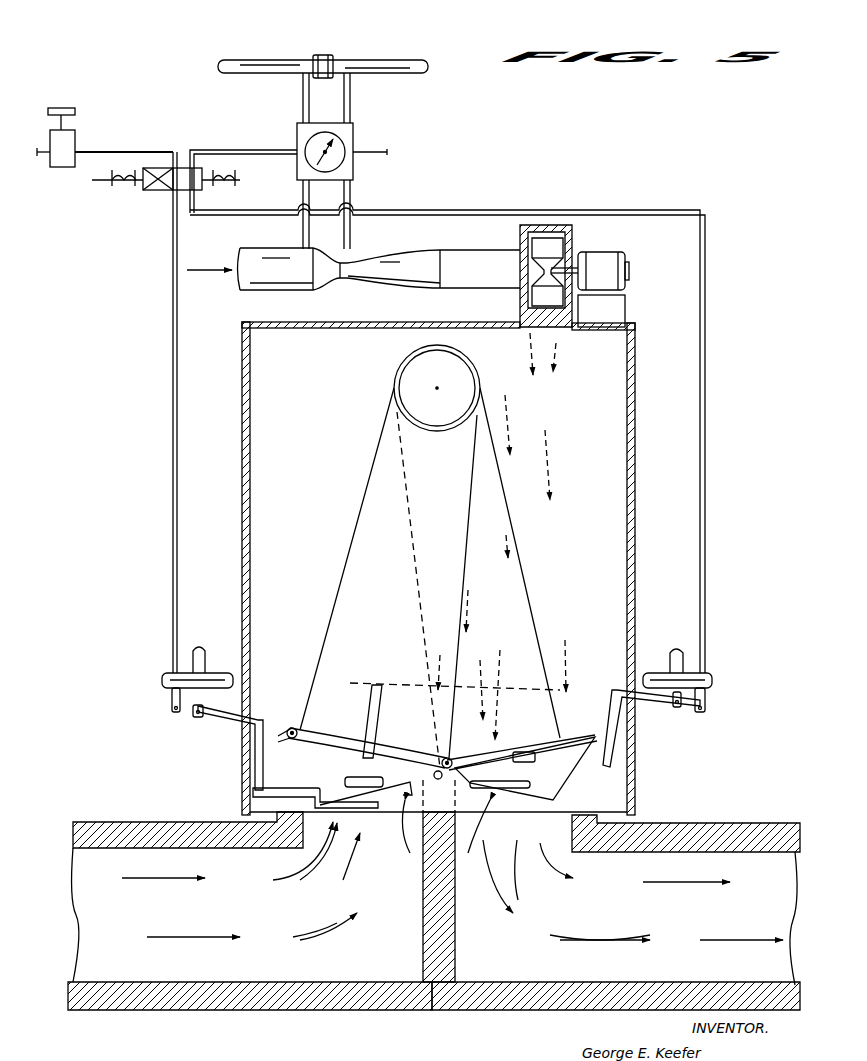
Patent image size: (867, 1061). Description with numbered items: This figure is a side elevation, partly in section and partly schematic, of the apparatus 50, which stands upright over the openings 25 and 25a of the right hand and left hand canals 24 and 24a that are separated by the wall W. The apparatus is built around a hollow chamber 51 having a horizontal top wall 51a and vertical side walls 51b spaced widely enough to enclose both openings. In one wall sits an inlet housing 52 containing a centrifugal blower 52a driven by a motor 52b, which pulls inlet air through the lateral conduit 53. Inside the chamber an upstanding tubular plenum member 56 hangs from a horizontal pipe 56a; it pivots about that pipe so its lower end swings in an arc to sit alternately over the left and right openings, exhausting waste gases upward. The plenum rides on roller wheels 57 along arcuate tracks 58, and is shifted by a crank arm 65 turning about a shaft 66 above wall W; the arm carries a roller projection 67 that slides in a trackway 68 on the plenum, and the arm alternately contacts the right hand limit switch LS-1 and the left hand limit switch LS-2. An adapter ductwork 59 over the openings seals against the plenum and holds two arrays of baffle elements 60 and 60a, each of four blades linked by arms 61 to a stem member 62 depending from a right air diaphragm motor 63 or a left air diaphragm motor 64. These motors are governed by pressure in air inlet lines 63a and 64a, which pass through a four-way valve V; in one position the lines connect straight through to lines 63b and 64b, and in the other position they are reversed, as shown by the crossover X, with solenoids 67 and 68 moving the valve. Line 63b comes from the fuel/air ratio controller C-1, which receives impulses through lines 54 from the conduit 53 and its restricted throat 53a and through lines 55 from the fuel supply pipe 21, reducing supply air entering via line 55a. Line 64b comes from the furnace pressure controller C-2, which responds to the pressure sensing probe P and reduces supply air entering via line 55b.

The fuel supply pipe 21 is at (402, 46).
The impulse lines 55 is at (350, 100).
The impulse lines 54 is at (350, 197).
The fuel/air ratio controller C-1 is at (365, 130).
The supply air line 55a is at (390, 152).
The air line 63b is at (220, 152).
The air inlet line 63a is at (520, 195).
The pressure sensing probe P is at (63, 106).
The supply air line 55b is at (40, 156).
The furnace pressure controller C-2 is at (83, 128).
The air line 64b is at (172, 150).
The air inlet line 64a is at (175, 330).
The four-way valve V is at (185, 165).
The crossover X is at (157, 190).
The solenoid 68 is at (120, 187).
The solenoid 67 is at (228, 187).
The lateral conduit 53 is at (455, 260).
The restricted throat 53a is at (343, 278).
The centrifugal blower 52a is at (548, 238).
The inlet housing 52 is at (572, 238).
The motor 52b is at (605, 258).
The hollow chamber 51 is at (401, 558).
The top wall 51a is at (262, 322).
The side walls 51b is at (340, 384).
The apparatus 50 is at (147, 441).
The horizontal pipe 56a is at (393, 385).
The plenum member 56 is at (342, 521).
The left hand limit switch LS-2 is at (363, 757).
The right hand limit switch LS-1 is at (548, 742).
The arcuate tracks 58 is at (305, 742).
The crank arm 65 is at (405, 763).
The roller wheels 57 is at (293, 728).
The shaft 66 is at (442, 775).
The left hand air diaphragm motor 64 is at (162, 680).
The stem member 62 is at (172, 696).
The arms 61 is at (255, 737).
The adapter ductwork 59 is at (253, 793).
The air diaphragm motor 63 is at (712, 678).
The left hand canal 24a is at (127, 960).
The right hand canal 24 is at (737, 868).
The wall W is at (452, 960).
The left hand opening 25a is at (241, 881).
The right hand opening 25 is at (633, 890).
The array of baffle elements 60a is at (405, 837).
The array of baffle elements 60 is at (476, 837).